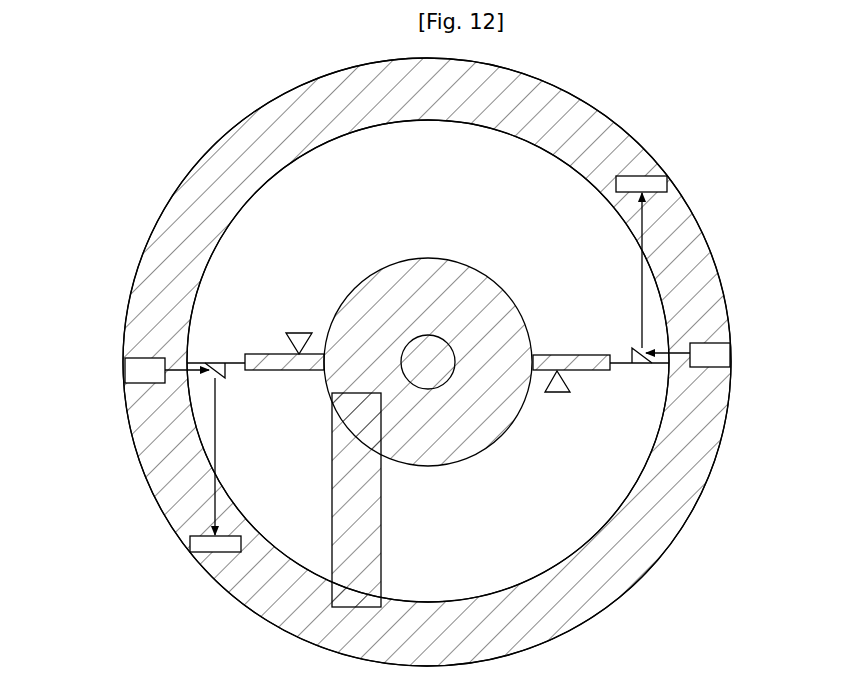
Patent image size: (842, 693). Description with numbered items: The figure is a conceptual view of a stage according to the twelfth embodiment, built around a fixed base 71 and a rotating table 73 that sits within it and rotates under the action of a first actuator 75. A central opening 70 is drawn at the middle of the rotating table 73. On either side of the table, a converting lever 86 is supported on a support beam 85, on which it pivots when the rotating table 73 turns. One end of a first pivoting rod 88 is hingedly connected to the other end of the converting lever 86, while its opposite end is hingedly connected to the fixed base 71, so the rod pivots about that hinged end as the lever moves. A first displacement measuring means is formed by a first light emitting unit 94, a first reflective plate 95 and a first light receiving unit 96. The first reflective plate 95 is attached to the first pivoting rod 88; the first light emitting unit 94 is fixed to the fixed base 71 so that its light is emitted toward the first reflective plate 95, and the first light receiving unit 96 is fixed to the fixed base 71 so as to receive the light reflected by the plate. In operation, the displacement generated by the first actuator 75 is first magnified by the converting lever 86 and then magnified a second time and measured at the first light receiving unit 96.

The shaft hole 70 is at (422, 358).
The fixed base 71 is at (690, 250).
The rotating table 73 is at (440, 458).
The first actuator 75 is at (345, 492).
The support beam 85 is at (299, 333).
The converting lever 86 is at (290, 371).
The first pivoting rod 88 is at (205, 362).
The first light emitting unit 94 is at (137, 372).
The first reflective plate 95 is at (225, 388).
The first light receiving unit 96 is at (668, 185).